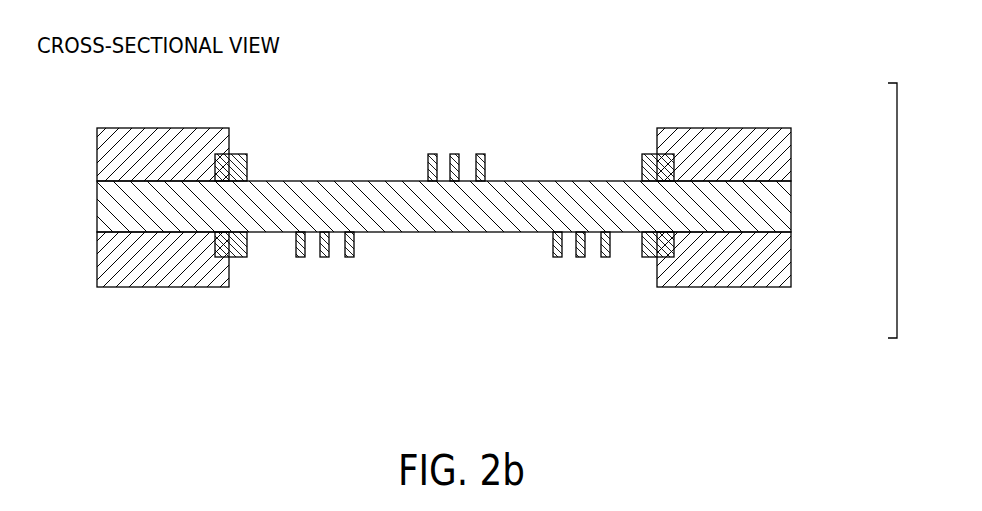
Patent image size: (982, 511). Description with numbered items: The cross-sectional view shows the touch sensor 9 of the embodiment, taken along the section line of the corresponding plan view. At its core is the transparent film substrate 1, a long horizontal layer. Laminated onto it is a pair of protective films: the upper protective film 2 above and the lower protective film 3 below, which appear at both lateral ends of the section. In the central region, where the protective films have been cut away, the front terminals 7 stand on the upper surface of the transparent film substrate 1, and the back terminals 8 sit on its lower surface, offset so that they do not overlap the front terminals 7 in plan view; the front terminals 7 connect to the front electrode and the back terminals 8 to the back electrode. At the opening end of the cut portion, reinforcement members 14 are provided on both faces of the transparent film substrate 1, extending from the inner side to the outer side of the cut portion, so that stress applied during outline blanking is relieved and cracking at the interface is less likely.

The transparent film substrate 1 is at (117, 212).
The upper protective film 2 is at (117, 156).
The lower protective film 3 is at (117, 261).
The front terminals 7 is at (431, 153).
The back terminals 8 is at (300, 258).
The touch sensor 9 is at (897, 212).
The reinforcement members 14 is at (232, 153).